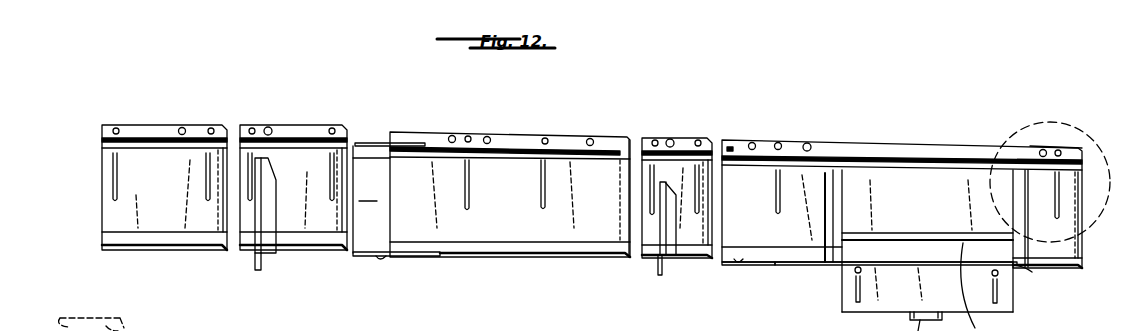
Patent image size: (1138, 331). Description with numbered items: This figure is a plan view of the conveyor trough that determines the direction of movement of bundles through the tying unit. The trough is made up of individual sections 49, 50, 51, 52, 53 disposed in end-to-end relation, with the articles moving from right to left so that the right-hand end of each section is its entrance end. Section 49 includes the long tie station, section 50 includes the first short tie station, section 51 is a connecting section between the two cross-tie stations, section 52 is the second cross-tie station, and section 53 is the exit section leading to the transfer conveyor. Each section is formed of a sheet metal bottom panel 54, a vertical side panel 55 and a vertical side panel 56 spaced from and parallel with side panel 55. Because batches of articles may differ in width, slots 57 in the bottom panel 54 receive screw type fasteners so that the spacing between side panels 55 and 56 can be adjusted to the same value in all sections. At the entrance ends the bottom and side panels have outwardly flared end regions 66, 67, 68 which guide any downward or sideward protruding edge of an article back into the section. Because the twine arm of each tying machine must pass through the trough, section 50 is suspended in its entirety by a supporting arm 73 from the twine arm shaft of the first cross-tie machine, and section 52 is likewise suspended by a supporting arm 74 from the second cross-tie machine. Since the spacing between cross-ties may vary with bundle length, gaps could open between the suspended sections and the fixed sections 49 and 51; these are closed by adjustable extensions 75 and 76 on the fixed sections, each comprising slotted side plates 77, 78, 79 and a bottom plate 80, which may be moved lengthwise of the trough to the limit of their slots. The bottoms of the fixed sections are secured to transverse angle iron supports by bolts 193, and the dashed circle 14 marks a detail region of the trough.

The detail circle 14 is at (1092, 138).
The trough section 49 is at (828, 141).
The trough section 50 is at (688, 138).
The connecting section 51 is at (507, 135).
The trough section 52 is at (307, 130).
The exit section 53 is at (152, 125).
The bottom panel 54 is at (812, 245).
The side panel 55 is at (797, 266).
The side panel 56 is at (133, 140).
The slot 57 is at (208, 182).
The outwardly flared end region 66 is at (1067, 138).
The outwardly flared end region 67 is at (1082, 247).
The outwardly flared end region 68 is at (1075, 276).
The supporting arm 73 is at (670, 262).
The supporting arm 74 is at (273, 252).
The adjustable extension 75 is at (740, 262).
The adjustable extension 76 is at (380, 258).
The slotted side plate 77 is at (757, 265).
The slotted side plate 78 is at (358, 258).
The slotted side plate 79 is at (372, 143).
The bottom plate 80 is at (371, 199).
The bolt 193 is at (183, 132).